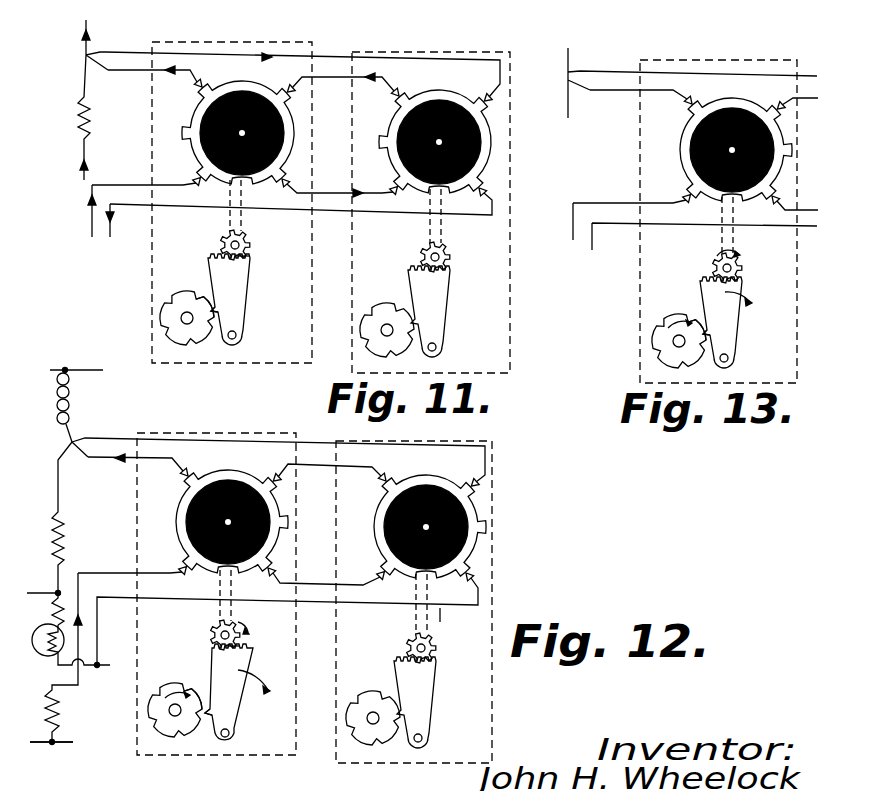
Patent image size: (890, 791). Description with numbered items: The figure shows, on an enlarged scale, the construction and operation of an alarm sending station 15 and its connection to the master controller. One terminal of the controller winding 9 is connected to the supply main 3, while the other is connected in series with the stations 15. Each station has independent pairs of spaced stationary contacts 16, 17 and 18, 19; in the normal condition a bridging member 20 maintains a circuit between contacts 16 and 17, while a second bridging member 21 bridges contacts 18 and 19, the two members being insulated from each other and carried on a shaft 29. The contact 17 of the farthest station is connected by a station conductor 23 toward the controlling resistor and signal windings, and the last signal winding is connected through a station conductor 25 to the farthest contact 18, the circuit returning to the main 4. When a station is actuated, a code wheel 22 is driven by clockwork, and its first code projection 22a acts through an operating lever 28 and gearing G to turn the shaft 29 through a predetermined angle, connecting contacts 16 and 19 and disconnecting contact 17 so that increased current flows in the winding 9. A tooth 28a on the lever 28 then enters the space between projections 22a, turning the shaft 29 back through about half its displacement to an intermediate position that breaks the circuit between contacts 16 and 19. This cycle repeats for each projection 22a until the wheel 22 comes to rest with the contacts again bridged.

In FIG. 12, the supply main 3 is at (56, 368).
In FIG. 12, the main 4 is at (40, 745).
In FIG. 12, the winding 9 is at (58, 418).
In FIG. 12, the alarm sending station 15 is at (186, 436).
In FIG. 11, the stationary contact 16 is at (204, 88).
In FIG. 13, the stationary contact 16 is at (690, 92).
In FIG. 12, the stationary contact 16 is at (193, 479).
In FIG. 11, the stationary contact 17 is at (289, 87).
In FIG. 13, the stationary contact 17 is at (777, 107).
In FIG. 12, the stationary contact 17 is at (272, 476).
In FIG. 11, the stationary contact 18 is at (290, 181).
In FIG. 13, the stationary contact 18 is at (790, 196).
In FIG. 12, the stationary contact 18 is at (273, 568).
In FIG. 11, the stationary contact 19 is at (194, 176).
In FIG. 13, the stationary contact 19 is at (688, 191).
In FIG. 12, the stationary contact 19 is at (191, 566).
In FIG. 11, the bridging member 20 is at (246, 85).
In FIG. 13, the bridging member 20 is at (679, 127).
In FIG. 12, the bridging member 20 is at (184, 544).
In FIG. 11, the bridging member 21 is at (225, 181).
In FIG. 13, the bridging member 21 is at (775, 182).
In FIG. 12, the bridging member 21 is at (276, 542).
In FIG. 11, the code wheel 22 is at (177, 305).
In FIG. 13, the code wheel 22 is at (666, 328).
In FIG. 12, the code wheel 22 is at (167, 700).
In FIG. 11, the code projection 22a is at (204, 294).
In FIG. 13, the code projection 22a is at (700, 318).
In FIG. 12, the code projection 22a is at (205, 690).
In FIG. 12, the station conductor 23 is at (456, 447).
In FIG. 12, the station conductor 25 is at (445, 612).
In FIG. 11, the operating lever 28 is at (244, 302).
In FIG. 13, the operating lever 28 is at (741, 323).
In FIG. 12, the operating lever 28 is at (240, 695).
In FIG. 11, the tooth 28a is at (215, 315).
In FIG. 13, the tooth 28a is at (710, 335).
In FIG. 12, the tooth 28a is at (210, 714).
In FIG. 11, the shaft 29 is at (251, 247).
In FIG. 13, the shaft 29 is at (743, 268).
In FIG. 12, the shaft 29 is at (212, 632).
In FIG. 11, the gearing G is at (245, 275).
In FIG. 12, the gearing G is at (250, 643).